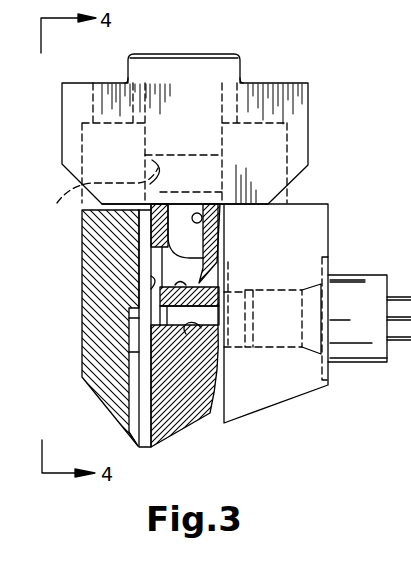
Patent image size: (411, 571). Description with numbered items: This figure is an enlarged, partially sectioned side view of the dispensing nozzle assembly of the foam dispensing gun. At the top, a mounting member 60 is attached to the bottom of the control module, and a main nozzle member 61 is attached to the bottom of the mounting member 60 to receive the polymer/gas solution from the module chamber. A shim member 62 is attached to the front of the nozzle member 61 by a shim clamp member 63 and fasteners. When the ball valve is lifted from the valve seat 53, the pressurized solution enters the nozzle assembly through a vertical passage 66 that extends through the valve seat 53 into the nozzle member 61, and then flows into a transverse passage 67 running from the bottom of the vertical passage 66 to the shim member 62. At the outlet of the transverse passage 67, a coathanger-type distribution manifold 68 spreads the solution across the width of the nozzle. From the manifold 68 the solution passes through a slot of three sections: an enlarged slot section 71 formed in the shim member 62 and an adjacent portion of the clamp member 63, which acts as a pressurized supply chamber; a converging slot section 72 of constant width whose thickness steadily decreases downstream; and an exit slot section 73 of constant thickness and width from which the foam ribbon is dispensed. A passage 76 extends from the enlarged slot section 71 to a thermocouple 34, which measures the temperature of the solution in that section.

The thermocouple 34 is at (363, 353).
The valve seat 53 is at (66, 197).
The mounting member 60 is at (70, 123).
The main nozzle member 61 is at (185, 428).
The shim member 62 is at (145, 233).
The shim clamp member 63 is at (94, 305).
The vertical passage 66 is at (206, 222).
The transverse passage 67 is at (222, 300).
The distribution manifold 68 is at (152, 277).
The enlarged slot section 71 is at (136, 330).
The converging slot section 72 is at (137, 358).
The exit slot section 73 is at (141, 428).
The passage 76 is at (186, 334).